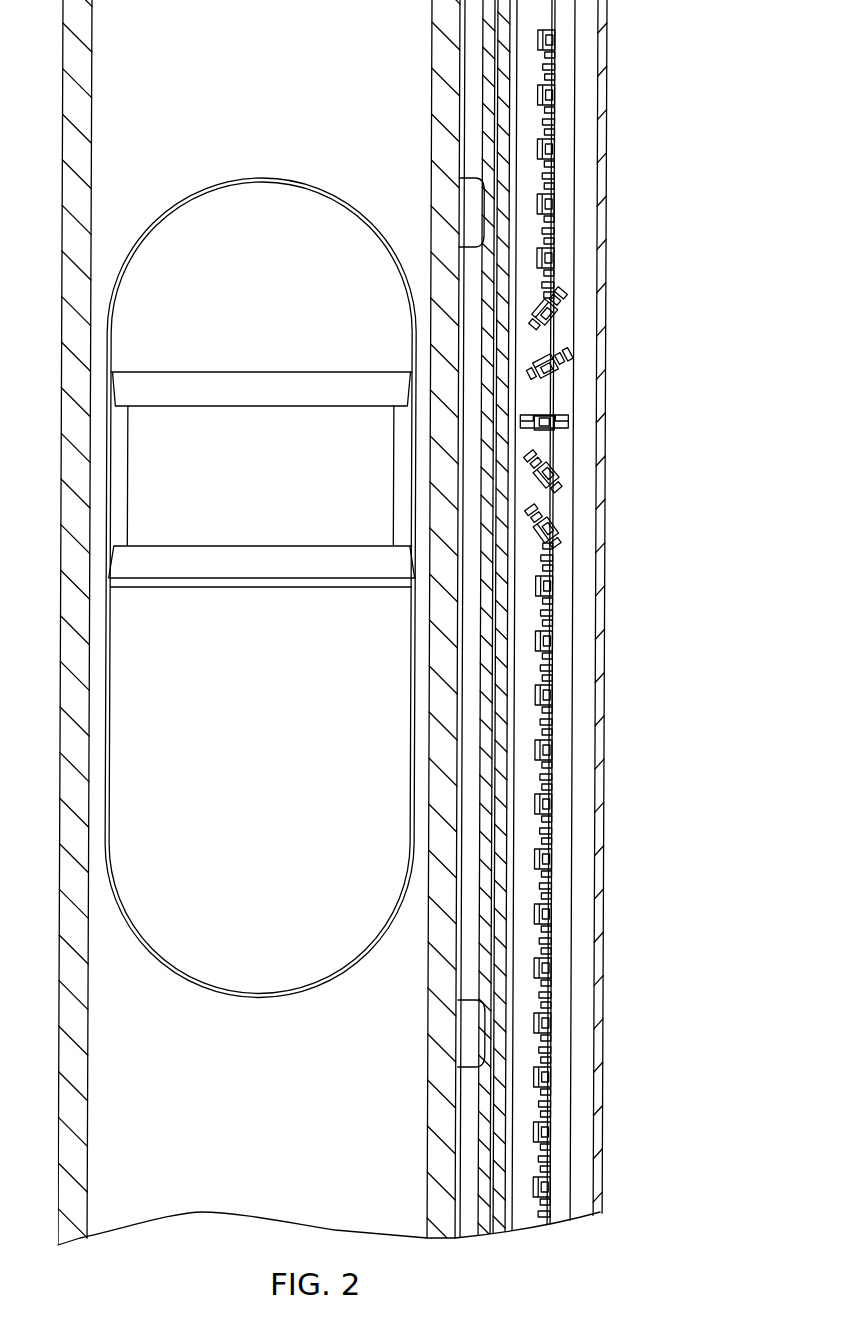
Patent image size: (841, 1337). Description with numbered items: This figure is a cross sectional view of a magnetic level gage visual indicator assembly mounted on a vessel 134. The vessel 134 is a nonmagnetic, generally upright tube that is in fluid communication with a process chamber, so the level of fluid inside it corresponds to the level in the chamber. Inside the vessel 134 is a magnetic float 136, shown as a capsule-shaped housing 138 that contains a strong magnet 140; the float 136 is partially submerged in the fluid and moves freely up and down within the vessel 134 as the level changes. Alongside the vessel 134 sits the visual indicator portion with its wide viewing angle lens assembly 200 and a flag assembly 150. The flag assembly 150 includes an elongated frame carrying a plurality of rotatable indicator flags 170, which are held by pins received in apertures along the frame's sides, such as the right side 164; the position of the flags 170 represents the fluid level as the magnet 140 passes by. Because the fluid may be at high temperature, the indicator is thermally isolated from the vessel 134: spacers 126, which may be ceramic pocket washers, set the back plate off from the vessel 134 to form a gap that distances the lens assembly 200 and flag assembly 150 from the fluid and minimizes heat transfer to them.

The spacers 126 is at (472, 217).
The vessel 134 is at (92, 122).
The magnetic float 136 is at (304, 988).
The housing 138 is at (204, 945).
The magnet 140 is at (247, 432).
The flag assembly 150 is at (624, 615).
The right side 164 is at (542, 452).
The indicator flags 170 is at (556, 355).
The lens assembly 200 is at (596, 620).